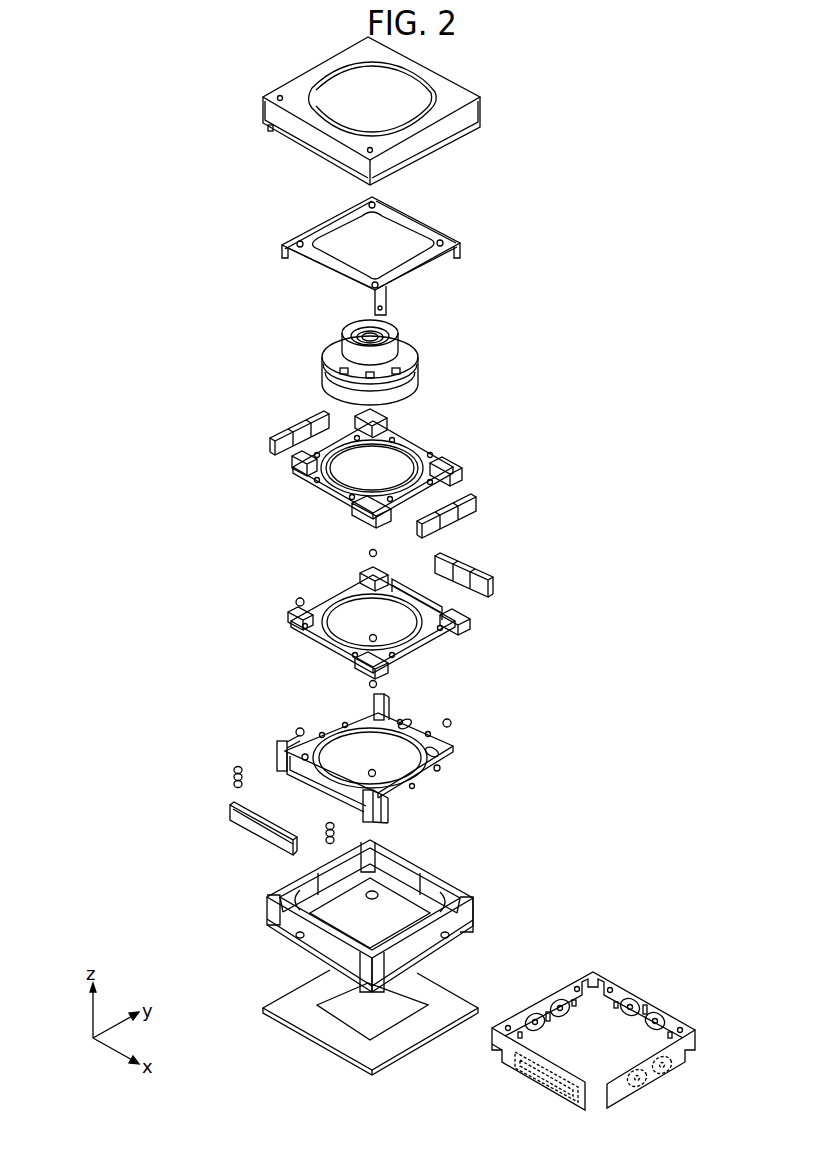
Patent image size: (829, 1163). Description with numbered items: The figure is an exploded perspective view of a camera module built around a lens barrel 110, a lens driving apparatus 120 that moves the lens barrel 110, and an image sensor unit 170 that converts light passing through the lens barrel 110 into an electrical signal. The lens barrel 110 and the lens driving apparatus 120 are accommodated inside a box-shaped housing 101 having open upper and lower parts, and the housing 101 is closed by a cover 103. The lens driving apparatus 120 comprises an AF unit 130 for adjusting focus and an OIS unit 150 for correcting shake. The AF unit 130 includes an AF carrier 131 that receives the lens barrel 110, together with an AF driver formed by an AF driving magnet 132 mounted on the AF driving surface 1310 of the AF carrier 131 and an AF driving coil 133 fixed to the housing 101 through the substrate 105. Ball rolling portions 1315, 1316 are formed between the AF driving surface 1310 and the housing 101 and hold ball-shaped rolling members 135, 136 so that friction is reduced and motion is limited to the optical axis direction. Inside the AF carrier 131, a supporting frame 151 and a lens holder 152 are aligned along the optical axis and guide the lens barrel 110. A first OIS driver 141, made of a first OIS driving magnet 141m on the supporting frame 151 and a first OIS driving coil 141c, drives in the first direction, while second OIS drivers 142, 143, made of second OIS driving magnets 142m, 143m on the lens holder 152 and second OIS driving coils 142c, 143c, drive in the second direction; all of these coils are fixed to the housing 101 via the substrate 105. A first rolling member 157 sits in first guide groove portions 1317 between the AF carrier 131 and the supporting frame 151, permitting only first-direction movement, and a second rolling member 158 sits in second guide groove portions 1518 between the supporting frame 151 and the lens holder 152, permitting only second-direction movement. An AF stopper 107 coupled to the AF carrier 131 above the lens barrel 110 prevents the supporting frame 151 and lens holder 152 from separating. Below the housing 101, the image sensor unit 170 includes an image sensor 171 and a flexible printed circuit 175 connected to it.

The cover 103 is at (455, 92).
The AF stopper 107 is at (436, 233).
The lens barrel 110 is at (407, 356).
The lens driving apparatus 120 is at (161, 547).
The OIS unit 150 is at (240, 523).
The lens holder 152 is at (318, 488).
The supporting frame 151 is at (320, 648).
The second guide groove portion 1518 is at (470, 618).
The second rolling member 158 is at (296, 601).
The AF unit 130 is at (245, 672).
The AF carrier 131 is at (448, 768).
The first guide groove portion 1317 is at (390, 708).
The ball rolling portion 1316 is at (385, 818).
The ball rolling portion 1315 is at (283, 751).
The AF driving surface 1310 is at (290, 770).
The first rolling member 157 is at (297, 729).
The rolling member 135 is at (232, 777).
The rolling member 136 is at (325, 830).
The AF driving magnet 132 is at (252, 824).
The first OIS driver 141 is at (640, 598).
The first OIS driving magnet 141m is at (487, 577).
The first OIS driving coil 141c is at (655, 1012).
The second OIS driver 142 is at (640, 680).
The second OIS driving magnet 142m is at (478, 503).
The second OIS driving coil 142c is at (663, 1057).
The second OIS driver 143 is at (640, 760).
The second OIS driving magnet 143m is at (290, 434).
The second OIS driving coil 143c is at (560, 998).
The housing 101 is at (278, 912).
The image sensor unit 170 is at (258, 996).
The image sensor 171 is at (320, 1012).
The flexible printed circuit 175 is at (340, 1065).
The substrate 105 is at (610, 982).
The AF driving coil 133 is at (575, 1066).